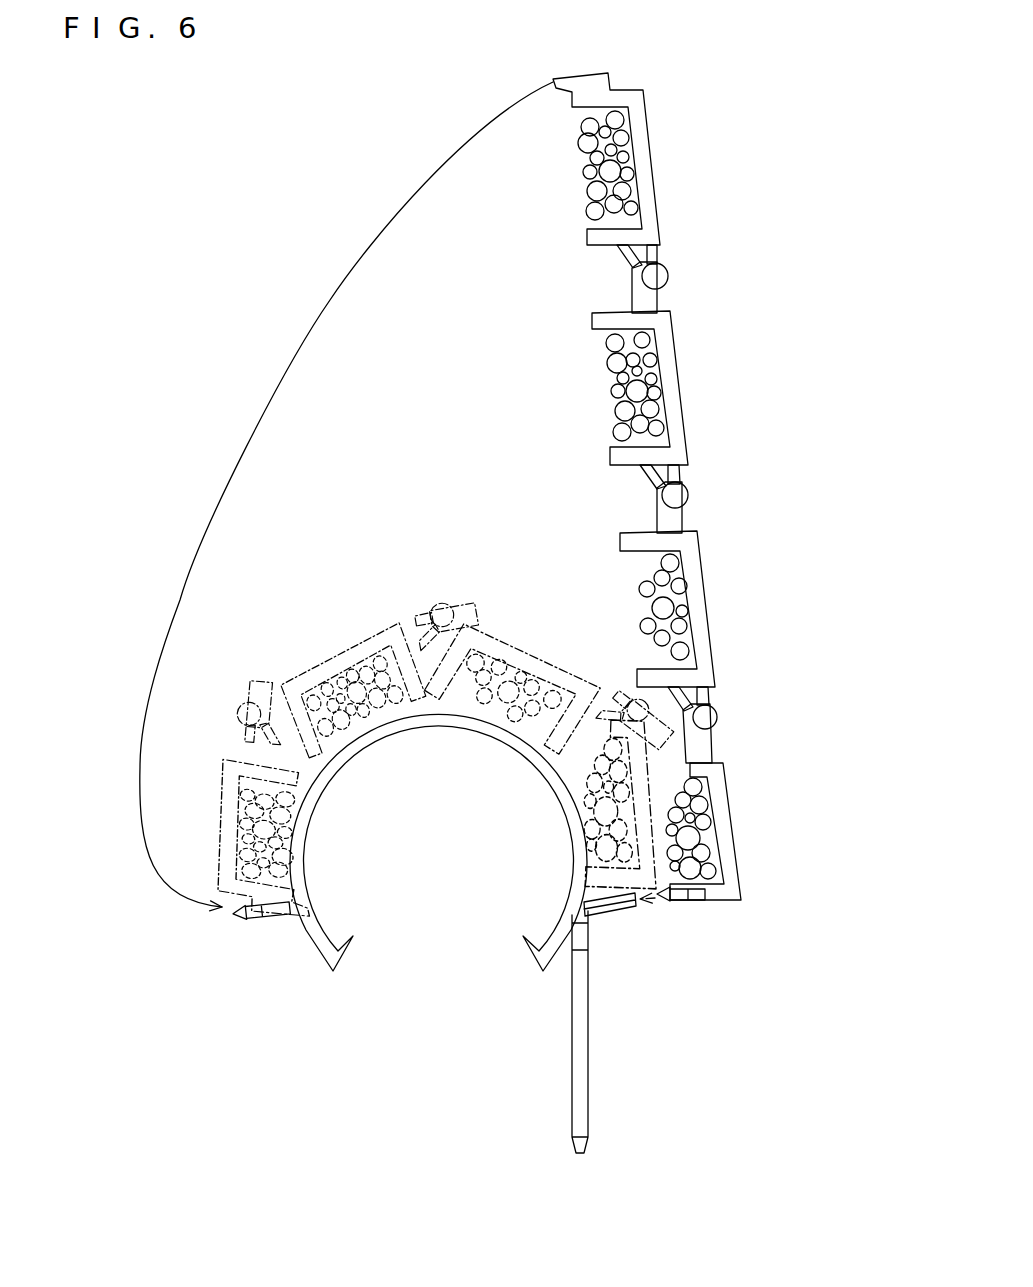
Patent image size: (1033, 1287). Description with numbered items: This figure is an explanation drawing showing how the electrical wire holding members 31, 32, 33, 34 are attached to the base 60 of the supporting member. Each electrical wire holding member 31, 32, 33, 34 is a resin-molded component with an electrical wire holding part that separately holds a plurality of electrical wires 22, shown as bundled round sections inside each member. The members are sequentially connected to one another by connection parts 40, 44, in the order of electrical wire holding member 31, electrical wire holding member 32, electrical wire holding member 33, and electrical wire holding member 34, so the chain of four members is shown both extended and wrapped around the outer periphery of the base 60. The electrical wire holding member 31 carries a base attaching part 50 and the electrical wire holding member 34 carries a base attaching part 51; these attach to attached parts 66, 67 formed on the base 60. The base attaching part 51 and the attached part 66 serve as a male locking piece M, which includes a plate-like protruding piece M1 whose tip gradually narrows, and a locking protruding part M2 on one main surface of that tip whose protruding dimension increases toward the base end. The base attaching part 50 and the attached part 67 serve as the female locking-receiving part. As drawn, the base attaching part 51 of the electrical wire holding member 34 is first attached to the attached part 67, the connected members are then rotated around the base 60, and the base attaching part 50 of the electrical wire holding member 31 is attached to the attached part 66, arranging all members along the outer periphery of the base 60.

The electrical wire 22 is at (590, 205).
The electrical wire holding member 31 is at (661, 150).
The electrical wire holding member 32 is at (689, 377).
The electrical wire holding member 33 is at (716, 590).
The electrical wire holding member 34 is at (742, 808).
The connection part 40 is at (673, 292).
The connection part 44 is at (660, 246).
The base attaching part 50 is at (599, 68).
The base attaching part 51 is at (704, 906).
The base 60 is at (432, 714).
The attached part 66 is at (229, 918).
The attached part 67 is at (606, 914).
The locking piece M is at (468, 946).
The protruding piece M1 is at (694, 903).
The locking protruding part M2 is at (667, 903).